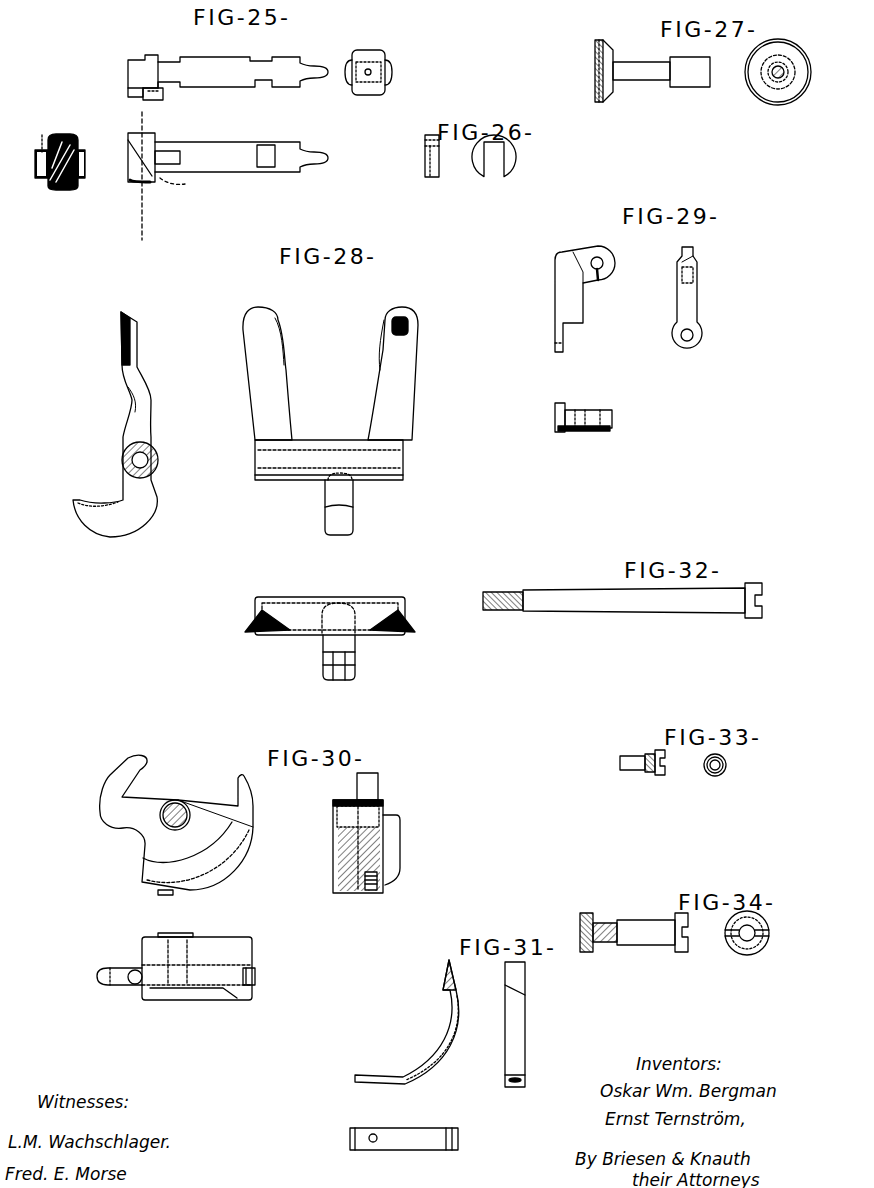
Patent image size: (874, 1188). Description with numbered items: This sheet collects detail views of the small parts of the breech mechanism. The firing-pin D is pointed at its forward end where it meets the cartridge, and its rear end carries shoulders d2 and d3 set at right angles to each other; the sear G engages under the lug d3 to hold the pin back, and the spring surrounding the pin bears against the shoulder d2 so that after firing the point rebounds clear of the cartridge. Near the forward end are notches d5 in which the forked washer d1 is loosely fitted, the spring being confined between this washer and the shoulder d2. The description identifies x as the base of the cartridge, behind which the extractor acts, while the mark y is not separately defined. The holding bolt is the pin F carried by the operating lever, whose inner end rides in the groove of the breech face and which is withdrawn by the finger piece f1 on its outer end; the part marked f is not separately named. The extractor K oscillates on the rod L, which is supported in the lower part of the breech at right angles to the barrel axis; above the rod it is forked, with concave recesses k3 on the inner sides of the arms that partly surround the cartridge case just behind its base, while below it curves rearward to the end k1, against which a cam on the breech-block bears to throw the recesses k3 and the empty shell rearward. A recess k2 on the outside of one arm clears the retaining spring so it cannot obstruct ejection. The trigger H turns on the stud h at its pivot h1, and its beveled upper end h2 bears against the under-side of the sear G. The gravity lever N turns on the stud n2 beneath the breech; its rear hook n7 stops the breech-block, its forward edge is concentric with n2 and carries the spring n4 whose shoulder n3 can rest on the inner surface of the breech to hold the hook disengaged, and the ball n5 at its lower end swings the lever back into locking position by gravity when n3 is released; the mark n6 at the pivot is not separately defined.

In FIG. 25, the firing-pin D is at (228, 118).
In FIG. 25, the forked washer d1 is at (149, 155).
In FIG. 26, the forked washer d1 is at (502, 156).
In FIG. 25, the shoulder d2 is at (181, 129).
In FIG. 25, the shoulder or lug d3 is at (60, 154).
In FIG. 25, the notches d5 is at (268, 86).
In FIG. 26, the notches d5 is at (423, 156).
In FIG. 25, the sear G is at (158, 100).
In FIG. 25, the base of the cartridge x is at (135, 174).
In FIG. 25, the section line y is at (132, 205).
In FIG. 27, the knurled head f is at (595, 71).
In FIG. 27, the pin F is at (661, 72).
In FIG. 27, the finger piece f1 is at (783, 72).
In FIG. 28, the extractor K is at (245, 471).
In FIG. 28, the end of extractor k1 is at (240, 583).
In FIG. 28, the recess k2 is at (402, 640).
In FIG. 28, the concave recesses k3 is at (279, 345).
In FIG. 28, the rod L is at (140, 460).
In FIG. 32, the rod L is at (622, 600).
In FIG. 29, the trigger H is at (636, 339).
In FIG. 29, the trigger pivot h1 is at (599, 281).
In FIG. 33, the trigger pivot h1 is at (726, 765).
In FIG. 29, the beveled upper end of trigger h2 is at (661, 244).
In FIG. 33, the screw h is at (642, 770).
In FIG. 30, the automatic gravity lever N is at (250, 877).
In FIG. 30, the pivot of lever N n2 is at (108, 985).
In FIG. 34, the pivot of lever N n2 is at (634, 938).
In FIG. 30, the shoulder extension n3 is at (321, 879).
In FIG. 31, the shoulder extension n3 is at (443, 980).
In FIG. 31, the spring n4 is at (452, 1023).
In FIG. 34, the spring n4 is at (747, 937).
In FIG. 30, the ball or weight n5 is at (263, 803).
In FIG. 30, the cam pivot n6 is at (175, 815).
In FIG. 30, the upwardly turned hook or stop n7 is at (102, 773).